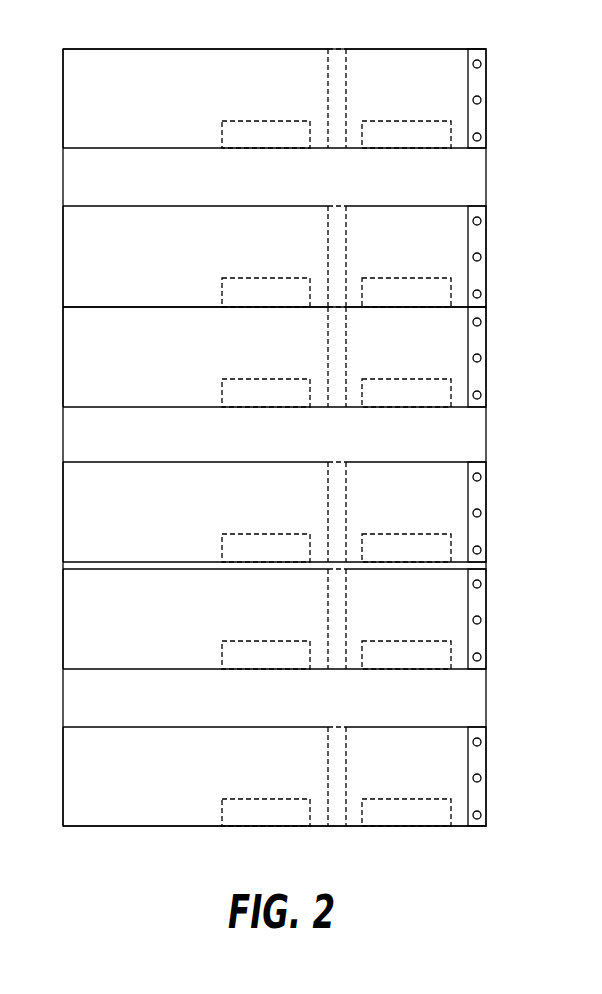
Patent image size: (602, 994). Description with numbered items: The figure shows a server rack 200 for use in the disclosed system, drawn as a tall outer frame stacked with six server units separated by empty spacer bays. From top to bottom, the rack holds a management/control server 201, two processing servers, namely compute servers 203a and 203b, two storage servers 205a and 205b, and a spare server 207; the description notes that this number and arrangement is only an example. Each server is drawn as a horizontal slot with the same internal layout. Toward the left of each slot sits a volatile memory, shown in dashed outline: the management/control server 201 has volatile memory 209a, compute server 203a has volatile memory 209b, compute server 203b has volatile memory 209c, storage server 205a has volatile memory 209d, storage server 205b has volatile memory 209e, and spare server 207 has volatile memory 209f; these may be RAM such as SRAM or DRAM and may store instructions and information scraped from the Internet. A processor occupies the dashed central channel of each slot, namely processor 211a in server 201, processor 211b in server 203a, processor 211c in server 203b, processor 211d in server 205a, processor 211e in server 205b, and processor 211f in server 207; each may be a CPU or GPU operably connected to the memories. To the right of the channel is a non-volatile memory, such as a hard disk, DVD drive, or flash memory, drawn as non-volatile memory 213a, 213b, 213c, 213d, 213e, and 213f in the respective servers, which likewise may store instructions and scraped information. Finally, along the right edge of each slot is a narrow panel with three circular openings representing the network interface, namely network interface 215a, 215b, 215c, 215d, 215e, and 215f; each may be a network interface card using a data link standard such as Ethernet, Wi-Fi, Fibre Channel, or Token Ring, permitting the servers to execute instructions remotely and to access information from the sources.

The server rack 200 is at (292, 31).
The management/control server 201 is at (122, 111).
The compute server 203a is at (127, 268).
The compute server 203b is at (127, 369).
The storage server 205a is at (127, 524).
The storage server 205b is at (127, 631).
The spare server 207 is at (122, 789).
The volatile memory 209a is at (229, 120).
The volatile memory 209b is at (229, 277).
The volatile memory 209c is at (229, 378).
The volatile memory 209d is at (229, 533).
The volatile memory 209e is at (229, 640).
The volatile memory 209f is at (229, 798).
The processor 211a is at (328, 107).
The processor 211b is at (328, 264).
The processor 211c is at (328, 365).
The processor 211d is at (328, 520).
The processor 211e is at (328, 627).
The processor 211f is at (328, 785).
The non-volatile memory 213a is at (441, 120).
The non-volatile memory 213b is at (441, 277).
The non-volatile memory 213c is at (441, 378).
The non-volatile memory 213d is at (441, 533).
The non-volatile memory 213e is at (441, 640).
The non-volatile memory 213f is at (441, 798).
The network interface 215a is at (480, 91).
The network interface 215b is at (480, 248).
The network interface 215c is at (480, 349).
The network interface 215d is at (480, 504).
The network interface 215e is at (480, 611).
The network interface 215f is at (480, 769).